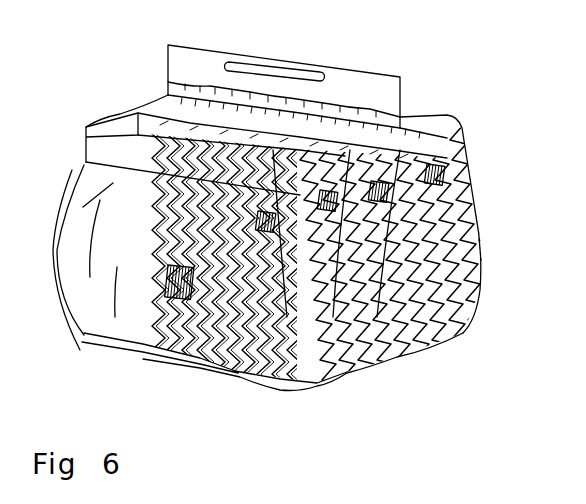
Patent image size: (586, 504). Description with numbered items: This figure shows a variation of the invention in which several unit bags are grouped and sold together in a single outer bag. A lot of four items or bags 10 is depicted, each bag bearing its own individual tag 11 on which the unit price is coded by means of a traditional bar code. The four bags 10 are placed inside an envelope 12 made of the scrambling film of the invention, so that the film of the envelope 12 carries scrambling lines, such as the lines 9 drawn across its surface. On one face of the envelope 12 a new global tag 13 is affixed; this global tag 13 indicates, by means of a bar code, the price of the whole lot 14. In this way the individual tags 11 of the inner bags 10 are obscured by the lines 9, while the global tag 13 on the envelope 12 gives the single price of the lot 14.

The scrambling lines 9 is at (375, 370).
The bags 10 is at (460, 172).
The individual tag 11 is at (256, 205).
The envelope 12 is at (72, 166).
The global tag 13 is at (160, 310).
The whole lot 14 is at (125, 100).